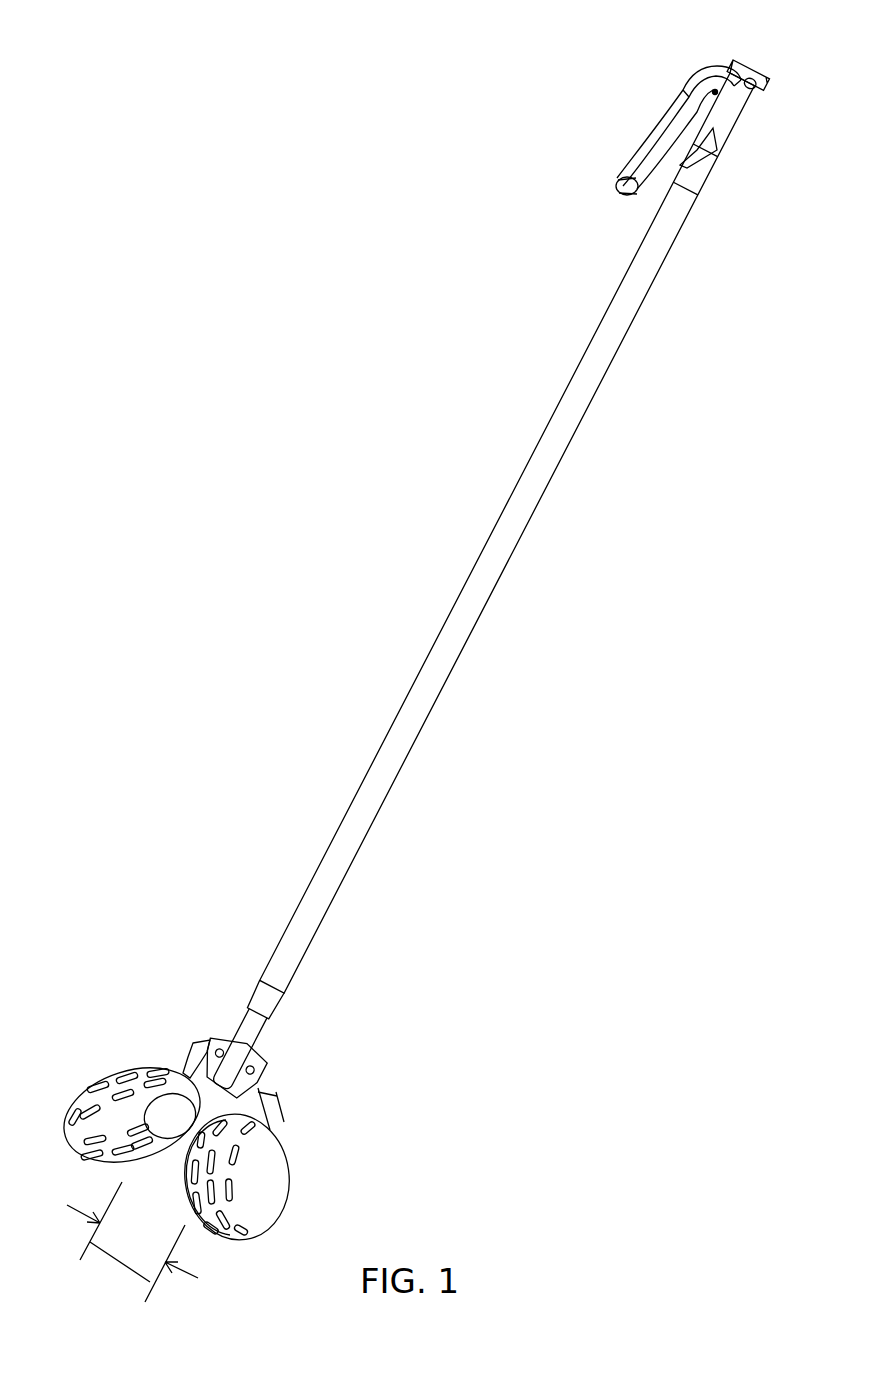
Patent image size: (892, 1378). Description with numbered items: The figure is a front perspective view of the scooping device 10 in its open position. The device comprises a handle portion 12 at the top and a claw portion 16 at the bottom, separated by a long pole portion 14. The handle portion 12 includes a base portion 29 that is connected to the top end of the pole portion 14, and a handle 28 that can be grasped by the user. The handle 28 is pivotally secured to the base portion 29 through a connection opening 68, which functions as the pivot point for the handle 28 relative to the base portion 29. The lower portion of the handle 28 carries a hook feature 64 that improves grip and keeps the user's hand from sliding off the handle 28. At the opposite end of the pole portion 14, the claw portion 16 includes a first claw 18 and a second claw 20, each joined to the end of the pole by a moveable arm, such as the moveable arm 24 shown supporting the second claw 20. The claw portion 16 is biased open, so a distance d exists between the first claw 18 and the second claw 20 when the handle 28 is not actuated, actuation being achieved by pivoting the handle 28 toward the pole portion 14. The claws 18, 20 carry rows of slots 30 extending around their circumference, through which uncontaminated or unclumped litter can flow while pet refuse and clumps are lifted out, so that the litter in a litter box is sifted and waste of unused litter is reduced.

The scooping device 10 is at (227, 331).
The handle portion 12 is at (544, 121).
The pole portion 14 is at (495, 530).
The claw portion 16 is at (382, 1019).
The first claw 18 is at (90, 1085).
The second claw 20 is at (288, 1173).
The moveable arm 24 is at (280, 1105).
The handle 28 is at (672, 132).
The base portion 29 is at (707, 167).
The slots 30 is at (218, 1200).
The hook feature 64 is at (612, 183).
The connection opening 68 is at (715, 90).